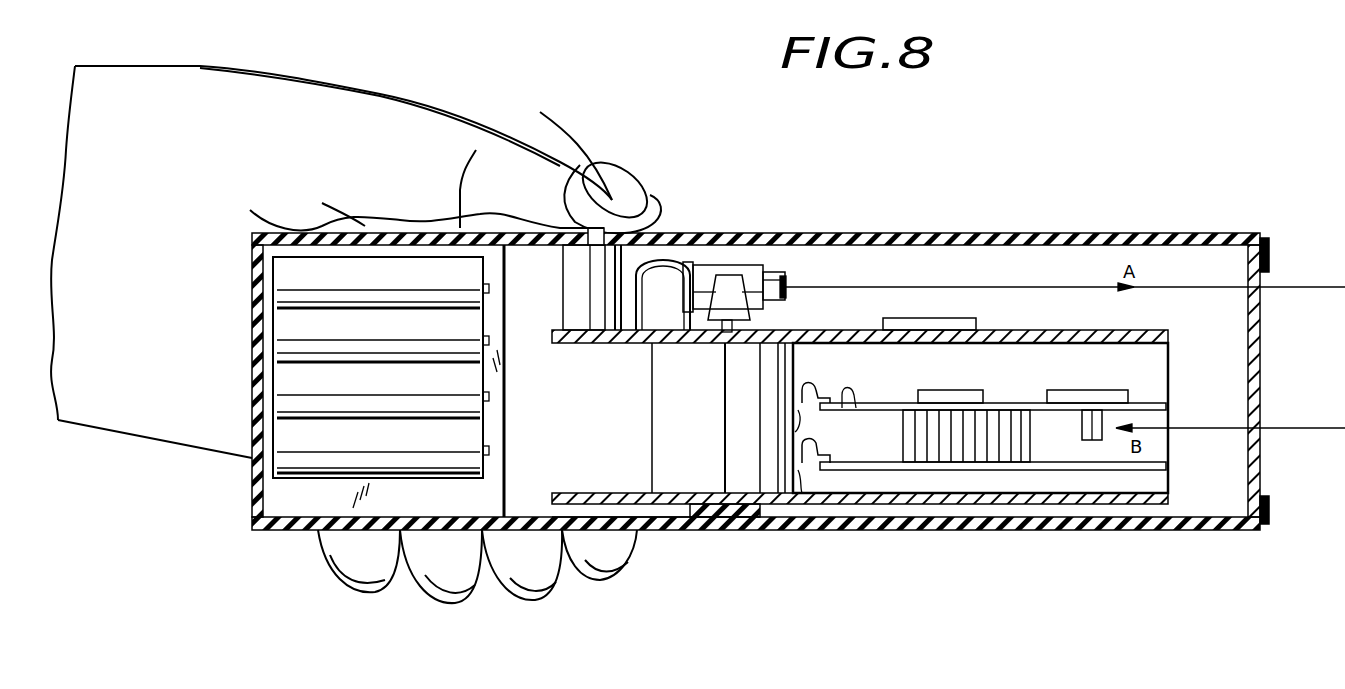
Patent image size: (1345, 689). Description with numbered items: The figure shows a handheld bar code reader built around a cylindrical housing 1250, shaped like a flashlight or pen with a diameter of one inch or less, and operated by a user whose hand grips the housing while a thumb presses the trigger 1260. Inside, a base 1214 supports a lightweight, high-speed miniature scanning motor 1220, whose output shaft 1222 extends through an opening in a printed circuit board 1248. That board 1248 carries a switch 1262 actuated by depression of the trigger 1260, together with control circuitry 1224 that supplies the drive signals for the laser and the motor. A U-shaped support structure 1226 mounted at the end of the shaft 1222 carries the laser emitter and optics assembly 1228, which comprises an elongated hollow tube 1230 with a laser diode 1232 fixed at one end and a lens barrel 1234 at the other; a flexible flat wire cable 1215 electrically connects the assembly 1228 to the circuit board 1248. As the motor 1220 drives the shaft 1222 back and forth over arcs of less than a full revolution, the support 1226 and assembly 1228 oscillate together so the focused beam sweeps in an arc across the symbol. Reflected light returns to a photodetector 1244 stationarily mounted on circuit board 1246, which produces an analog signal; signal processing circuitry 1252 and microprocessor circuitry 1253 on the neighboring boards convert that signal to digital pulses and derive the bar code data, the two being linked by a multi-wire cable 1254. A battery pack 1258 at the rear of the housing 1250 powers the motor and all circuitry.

The base 1214 is at (574, 494).
The flexible flat wire cable 1215 is at (645, 260).
The scanning motor 1220 is at (668, 437).
The output shaft 1222 is at (722, 346).
The control circuitry 1224 is at (975, 322).
The U-shaped support structure 1226 is at (735, 313).
The laser emitter and optics assembly 1228 is at (750, 252).
The elongated hollow tube 1230 is at (715, 280).
The laser diode 1232 is at (697, 300).
The lens barrel 1234 is at (800, 288).
The photodetector 1244 is at (1105, 442).
The circuit board 1246 is at (878, 402).
The printed circuit board 1248 is at (586, 344).
The housing 1250 is at (902, 460).
The signal processing circuitry 1252 is at (972, 400).
The microprocessor circuitry 1253 is at (1104, 400).
The multi-wire cable 1254 is at (1032, 432).
The battery pack 1258 is at (310, 335).
The trigger 1260 is at (594, 230).
The switch 1262 is at (578, 296).